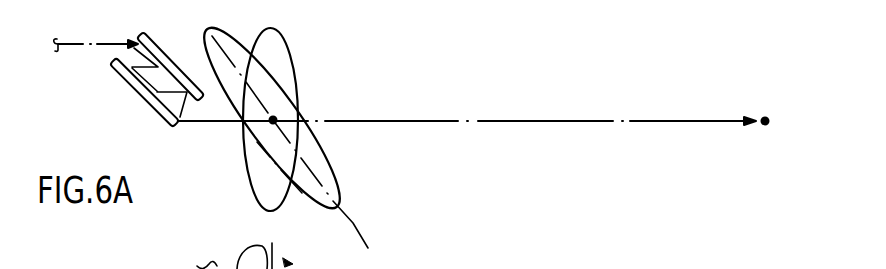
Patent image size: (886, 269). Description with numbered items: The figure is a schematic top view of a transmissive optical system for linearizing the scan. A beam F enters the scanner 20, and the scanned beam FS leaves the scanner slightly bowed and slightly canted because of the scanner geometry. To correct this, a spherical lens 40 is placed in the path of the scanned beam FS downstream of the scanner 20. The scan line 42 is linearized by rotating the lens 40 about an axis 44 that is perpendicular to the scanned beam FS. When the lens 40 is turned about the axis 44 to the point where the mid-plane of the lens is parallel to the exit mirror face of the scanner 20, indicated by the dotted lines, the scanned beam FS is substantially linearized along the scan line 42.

The incident light flux F is at (83, 46).
The scanner 20 is at (142, 105).
The spherical lens 40 is at (297, 98).
The scan line 42 is at (765, 121).
The axis 44 is at (353, 223).
The scanned beam FS is at (226, 122).